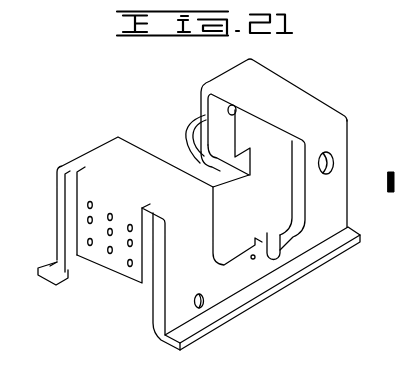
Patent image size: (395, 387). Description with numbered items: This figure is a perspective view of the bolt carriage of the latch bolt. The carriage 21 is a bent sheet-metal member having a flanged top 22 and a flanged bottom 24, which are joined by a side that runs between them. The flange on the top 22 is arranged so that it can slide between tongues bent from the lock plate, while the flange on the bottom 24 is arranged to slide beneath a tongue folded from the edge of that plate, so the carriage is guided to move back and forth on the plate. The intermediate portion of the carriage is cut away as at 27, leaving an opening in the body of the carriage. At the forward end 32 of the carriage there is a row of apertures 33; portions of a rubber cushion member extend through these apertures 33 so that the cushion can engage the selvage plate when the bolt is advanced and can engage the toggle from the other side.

The carriage 21 is at (114, 134).
The flanged top 22 is at (212, 134).
The flanged bottom 24 is at (166, 294).
The cut-away intermediate portion 27 is at (297, 195).
The forward end 32 is at (105, 265).
The apertures 33 is at (131, 266).